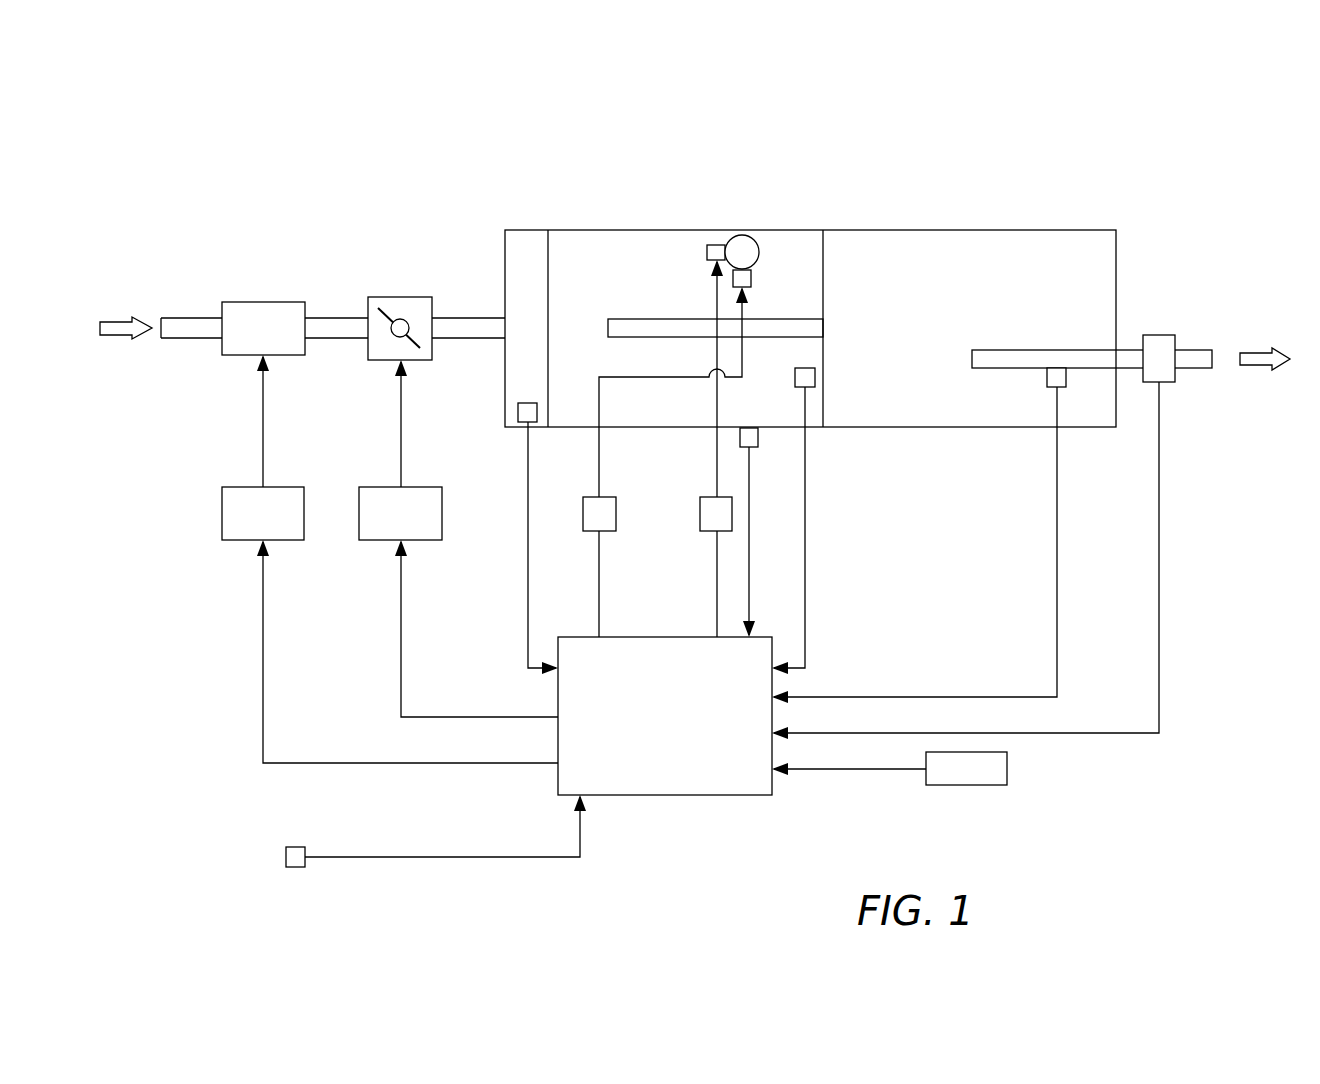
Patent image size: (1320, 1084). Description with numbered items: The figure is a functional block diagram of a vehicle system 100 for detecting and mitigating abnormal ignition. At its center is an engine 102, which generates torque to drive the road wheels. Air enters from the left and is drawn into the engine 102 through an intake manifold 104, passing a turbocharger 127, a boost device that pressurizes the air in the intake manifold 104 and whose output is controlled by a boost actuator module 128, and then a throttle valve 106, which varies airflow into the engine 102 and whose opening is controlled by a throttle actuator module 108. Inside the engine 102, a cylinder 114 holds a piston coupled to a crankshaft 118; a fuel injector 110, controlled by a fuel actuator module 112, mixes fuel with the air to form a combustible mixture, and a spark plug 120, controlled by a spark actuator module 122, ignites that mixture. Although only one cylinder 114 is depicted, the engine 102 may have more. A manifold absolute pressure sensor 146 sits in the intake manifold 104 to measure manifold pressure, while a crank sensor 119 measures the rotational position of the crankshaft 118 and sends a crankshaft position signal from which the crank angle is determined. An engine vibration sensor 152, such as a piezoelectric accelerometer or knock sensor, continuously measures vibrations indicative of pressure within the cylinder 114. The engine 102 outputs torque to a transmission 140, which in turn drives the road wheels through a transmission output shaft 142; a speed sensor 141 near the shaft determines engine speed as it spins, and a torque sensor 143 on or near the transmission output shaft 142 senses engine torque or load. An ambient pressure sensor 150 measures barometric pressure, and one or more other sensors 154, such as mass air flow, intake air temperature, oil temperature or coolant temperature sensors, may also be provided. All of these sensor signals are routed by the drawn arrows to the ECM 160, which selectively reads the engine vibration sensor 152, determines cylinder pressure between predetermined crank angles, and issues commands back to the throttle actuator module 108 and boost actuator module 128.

The vehicle system 100 is at (508, 126).
The engine 102 is at (642, 230).
The intake manifold 104 is at (518, 230).
The throttle valve 106 is at (383, 297).
The throttle actuator module 108 is at (372, 540).
The fuel injector 110 is at (751, 275).
The fuel actuator module 112 is at (616, 520).
The cylinder 114 is at (758, 242).
The crankshaft 118 is at (632, 319).
The crank sensor 119 is at (815, 374).
The spark plug 120 is at (714, 245).
The spark actuator module 122 is at (700, 502).
The turbocharger 127 is at (277, 302).
The boost actuator module 128 is at (233, 540).
The transmission 140 is at (1005, 230).
The speed sensor 141 is at (1047, 383).
The transmission output shaft 142 is at (1020, 350).
The torque sensor 143 is at (1166, 335).
The manifold absolute pressure sensor 146 is at (518, 410).
The ambient pressure sensor 150 is at (286, 856).
The engine vibration sensor 152 is at (758, 433).
The other sensors 154 is at (980, 785).
The ECM 160 is at (664, 795).